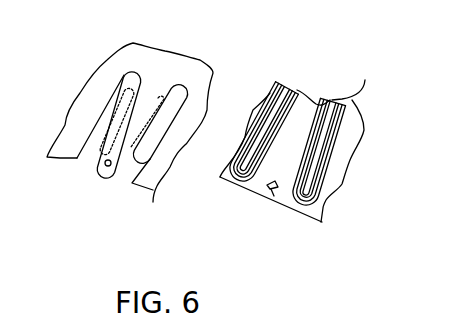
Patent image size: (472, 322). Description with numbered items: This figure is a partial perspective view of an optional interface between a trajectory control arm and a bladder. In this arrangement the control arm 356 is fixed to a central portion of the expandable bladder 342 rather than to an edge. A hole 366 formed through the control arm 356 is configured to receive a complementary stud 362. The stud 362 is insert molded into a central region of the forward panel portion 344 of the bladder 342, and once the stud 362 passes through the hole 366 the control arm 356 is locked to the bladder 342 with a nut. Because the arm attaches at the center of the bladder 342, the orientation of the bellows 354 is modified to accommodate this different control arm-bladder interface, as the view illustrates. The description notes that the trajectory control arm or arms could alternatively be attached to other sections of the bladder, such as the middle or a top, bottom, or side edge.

The expandable bladder 342 is at (294, 212).
The forward panel portion 344 is at (306, 110).
The bellows 354 is at (272, 93).
The control arm 356 is at (104, 178).
The stud 362 is at (274, 196).
The hole 366 is at (117, 153).